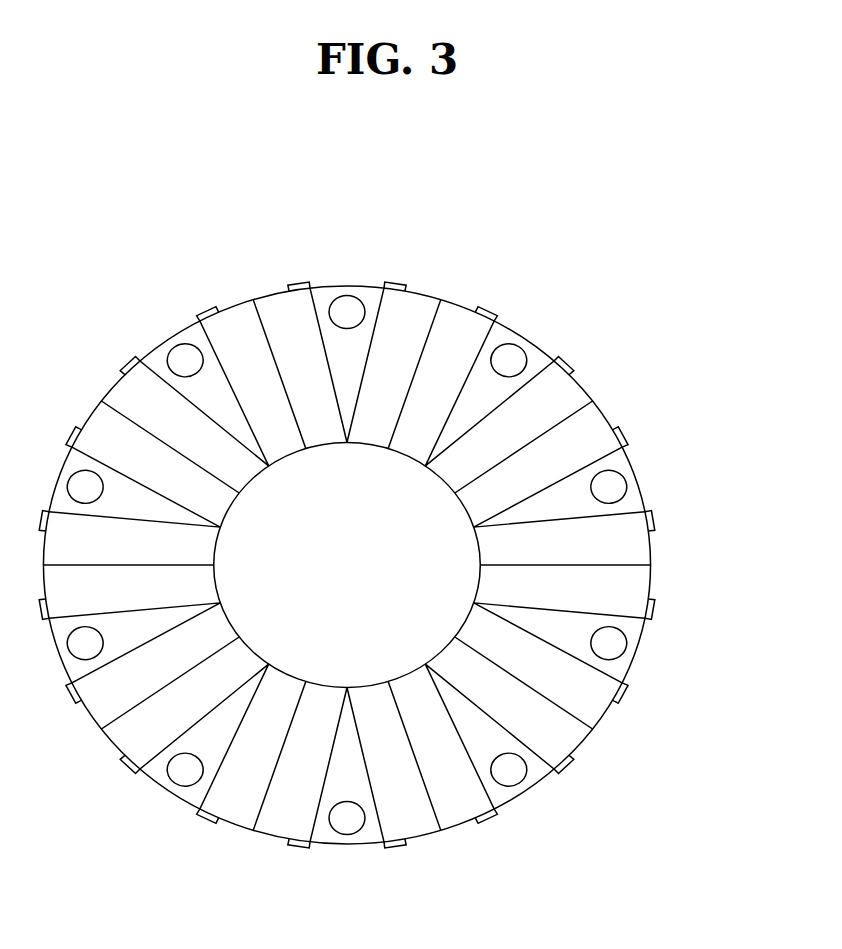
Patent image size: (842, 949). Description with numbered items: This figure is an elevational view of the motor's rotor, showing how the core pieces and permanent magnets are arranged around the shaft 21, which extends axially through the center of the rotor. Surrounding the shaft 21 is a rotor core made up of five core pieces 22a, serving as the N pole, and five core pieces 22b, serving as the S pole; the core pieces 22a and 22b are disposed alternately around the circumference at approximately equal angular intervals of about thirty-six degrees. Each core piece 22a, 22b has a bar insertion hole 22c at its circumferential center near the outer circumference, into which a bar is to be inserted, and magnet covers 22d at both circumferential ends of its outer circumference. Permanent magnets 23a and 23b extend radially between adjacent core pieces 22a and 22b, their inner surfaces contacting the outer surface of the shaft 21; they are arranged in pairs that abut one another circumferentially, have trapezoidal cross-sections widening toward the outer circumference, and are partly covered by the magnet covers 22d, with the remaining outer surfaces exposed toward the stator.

The shaft 21 is at (487, 597).
The core piece 22a is at (359, 283).
The core piece 22b is at (173, 340).
The bar insertion hole 22c is at (346, 308).
The magnet cover 22d is at (318, 330).
The permanent magnet 23a is at (247, 343).
The permanent magnet 23b is at (228, 308).